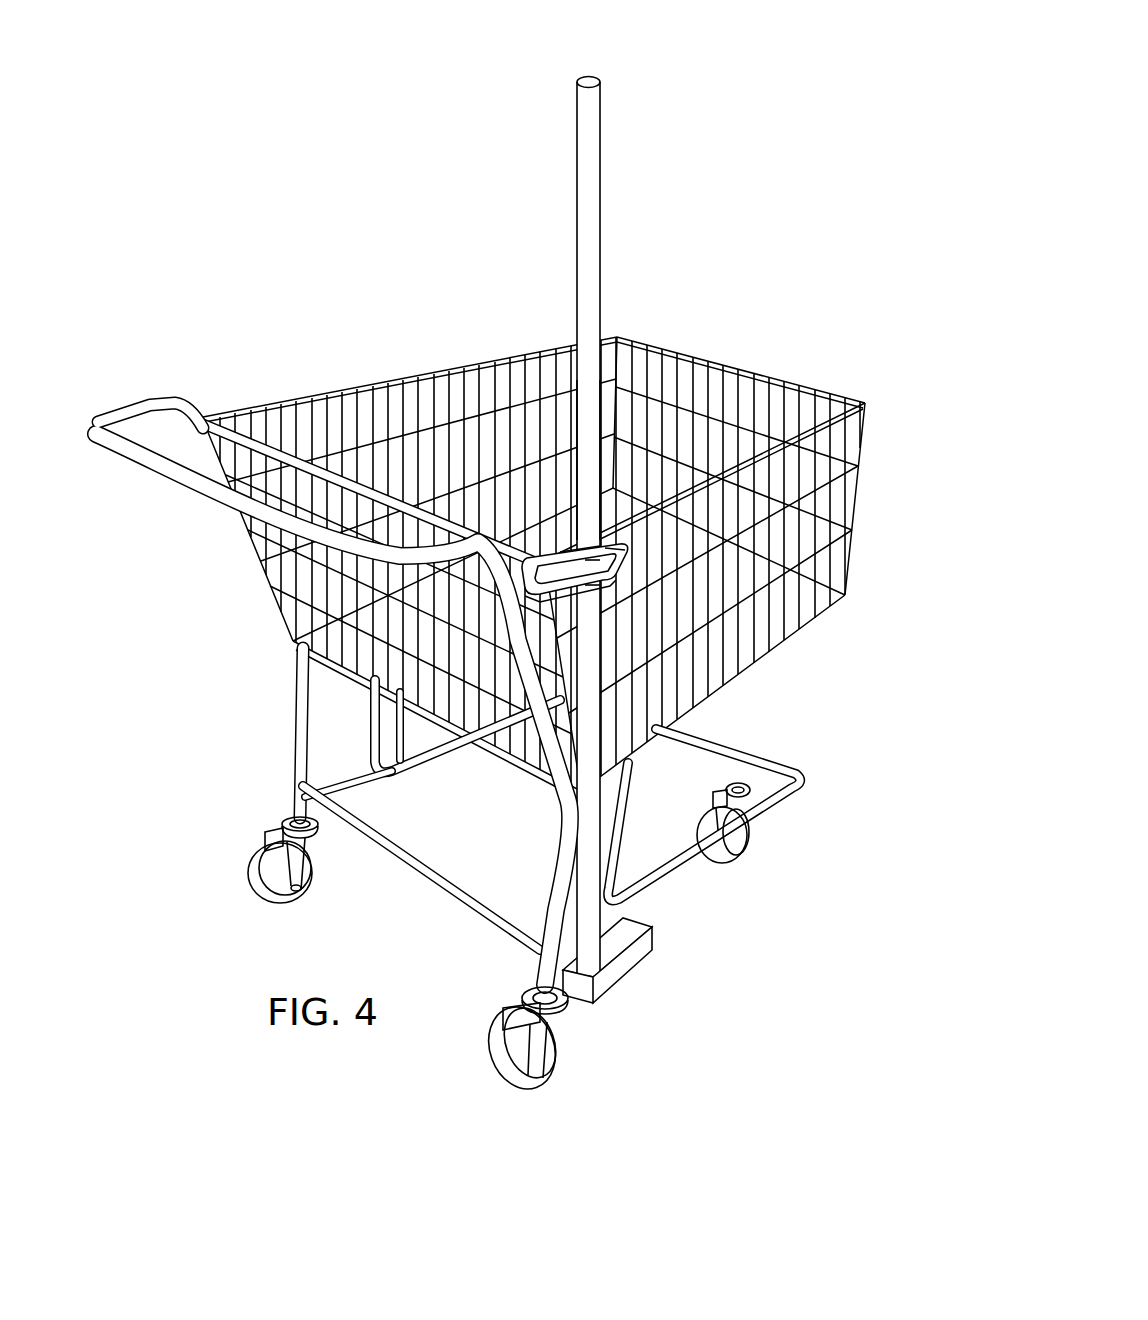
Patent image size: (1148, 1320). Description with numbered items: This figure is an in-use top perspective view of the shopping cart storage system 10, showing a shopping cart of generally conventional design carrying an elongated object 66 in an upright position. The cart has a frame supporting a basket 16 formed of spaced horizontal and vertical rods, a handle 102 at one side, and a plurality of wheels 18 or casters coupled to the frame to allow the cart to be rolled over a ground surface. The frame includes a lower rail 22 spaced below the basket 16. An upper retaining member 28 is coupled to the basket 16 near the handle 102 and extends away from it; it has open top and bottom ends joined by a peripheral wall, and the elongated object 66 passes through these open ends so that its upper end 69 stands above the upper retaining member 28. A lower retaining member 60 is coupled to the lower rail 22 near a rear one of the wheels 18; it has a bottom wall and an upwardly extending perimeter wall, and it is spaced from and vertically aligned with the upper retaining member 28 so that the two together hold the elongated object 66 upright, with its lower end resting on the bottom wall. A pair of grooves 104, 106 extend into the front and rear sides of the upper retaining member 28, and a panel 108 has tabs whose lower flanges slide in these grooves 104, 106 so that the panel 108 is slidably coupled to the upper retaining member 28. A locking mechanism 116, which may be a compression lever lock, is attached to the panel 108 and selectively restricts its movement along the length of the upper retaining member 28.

The shopping cart storage system 10 is at (508, 619).
The basket 16 is at (858, 494).
The wheels 18 is at (283, 888).
The lower rail 22 is at (678, 878).
The upper retaining member 28 is at (547, 615).
The lower retaining member 60 is at (629, 600).
The elongated object 66 is at (593, 417).
The upper end 69 is at (595, 185).
The handle 102 is at (232, 503).
The groove 104 is at (545, 548).
The groove 106 is at (592, 562).
The panel 108 is at (620, 548).
The locking mechanism 116 is at (592, 586).